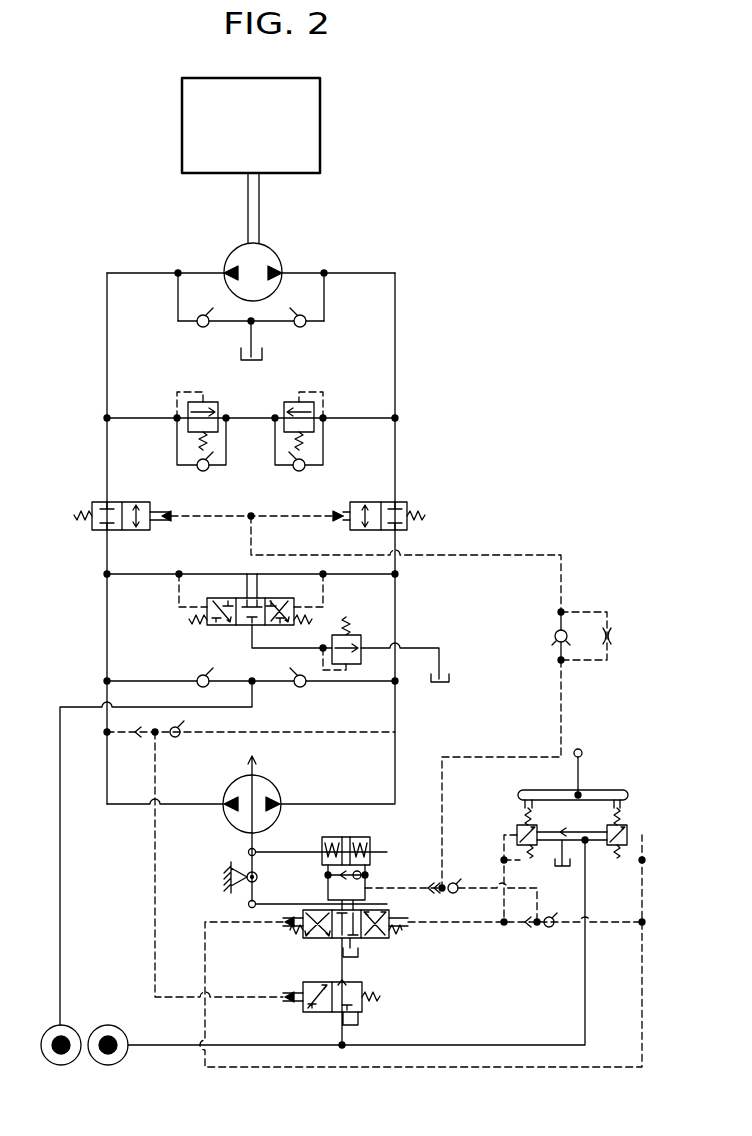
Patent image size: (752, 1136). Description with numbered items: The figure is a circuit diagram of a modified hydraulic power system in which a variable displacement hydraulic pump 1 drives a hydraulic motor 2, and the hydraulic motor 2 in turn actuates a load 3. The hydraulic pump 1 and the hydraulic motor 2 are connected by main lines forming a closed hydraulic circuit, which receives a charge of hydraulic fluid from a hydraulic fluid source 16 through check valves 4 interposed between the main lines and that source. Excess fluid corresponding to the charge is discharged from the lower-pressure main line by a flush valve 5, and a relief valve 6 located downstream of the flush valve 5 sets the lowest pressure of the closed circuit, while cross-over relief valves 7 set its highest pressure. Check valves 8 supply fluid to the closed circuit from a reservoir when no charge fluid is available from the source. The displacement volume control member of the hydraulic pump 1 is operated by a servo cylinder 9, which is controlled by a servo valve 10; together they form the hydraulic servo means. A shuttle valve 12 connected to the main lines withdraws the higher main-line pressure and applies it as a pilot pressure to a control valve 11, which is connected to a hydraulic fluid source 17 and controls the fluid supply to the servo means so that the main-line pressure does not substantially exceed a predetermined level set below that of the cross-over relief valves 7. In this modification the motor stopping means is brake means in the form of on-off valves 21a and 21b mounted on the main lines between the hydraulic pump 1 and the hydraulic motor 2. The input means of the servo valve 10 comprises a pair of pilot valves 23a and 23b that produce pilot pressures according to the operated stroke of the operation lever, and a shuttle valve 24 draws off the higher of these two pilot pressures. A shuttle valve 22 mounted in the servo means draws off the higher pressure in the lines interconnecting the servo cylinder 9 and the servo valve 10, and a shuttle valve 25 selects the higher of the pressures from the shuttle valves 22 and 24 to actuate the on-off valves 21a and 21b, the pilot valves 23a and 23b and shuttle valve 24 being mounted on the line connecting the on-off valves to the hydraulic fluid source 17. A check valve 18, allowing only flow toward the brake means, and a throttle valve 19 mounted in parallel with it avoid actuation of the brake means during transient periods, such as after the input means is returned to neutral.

The variable displacement hydraulic pump 1 is at (277, 785).
The hydraulic motor 2 is at (231, 263).
The load 3 is at (182, 129).
The check valves 4 is at (199, 678).
The flush valve 5 is at (207, 625).
The relief valve 6 is at (361, 639).
The cross-over relief valves 7 is at (188, 411).
The check valves 8 is at (200, 324).
The servo cylinder 9 is at (370, 838).
The servo valve 10 is at (303, 936).
The control valve 11 is at (303, 1005).
The shuttle valve 12 is at (176, 738).
The hydraulic fluid source 16 is at (60, 1065).
The hydraulic fluid source 17 is at (108, 1065).
The check valve 18 is at (553, 632).
The throttle valve 19 is at (615, 636).
The on-off valve 21a is at (406, 502).
The on-off valve 21b is at (92, 502).
The shuttle valve 22 is at (328, 891).
The pilot valve 23a is at (630, 827).
The pilot valve 23b is at (519, 828).
The shuttle valve 24 is at (547, 928).
The shuttle valve 25 is at (445, 886).